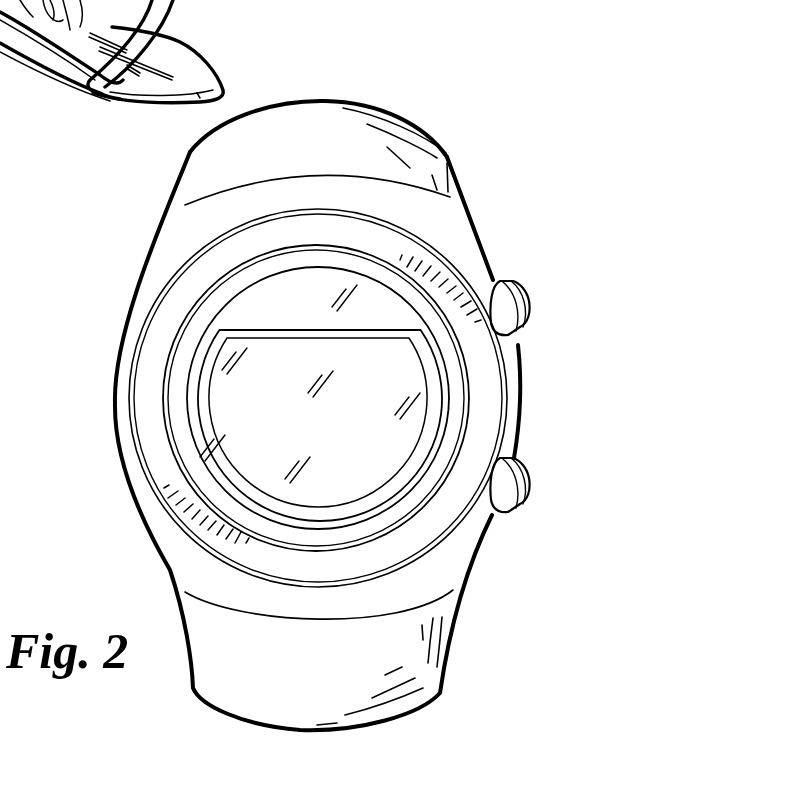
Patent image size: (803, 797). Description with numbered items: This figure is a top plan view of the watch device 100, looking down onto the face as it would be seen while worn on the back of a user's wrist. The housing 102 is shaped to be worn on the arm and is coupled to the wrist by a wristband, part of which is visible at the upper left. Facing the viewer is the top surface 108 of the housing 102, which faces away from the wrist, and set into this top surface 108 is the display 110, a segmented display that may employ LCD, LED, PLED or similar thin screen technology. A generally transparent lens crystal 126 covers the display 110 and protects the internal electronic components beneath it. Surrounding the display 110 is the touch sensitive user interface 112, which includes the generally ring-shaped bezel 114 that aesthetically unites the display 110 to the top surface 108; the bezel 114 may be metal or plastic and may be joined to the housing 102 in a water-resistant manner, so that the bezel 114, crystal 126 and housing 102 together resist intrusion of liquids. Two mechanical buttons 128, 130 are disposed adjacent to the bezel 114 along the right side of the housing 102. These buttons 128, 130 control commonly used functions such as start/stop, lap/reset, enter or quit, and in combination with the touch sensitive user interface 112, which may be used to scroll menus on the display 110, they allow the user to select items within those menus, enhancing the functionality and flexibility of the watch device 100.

The watch device 100 is at (517, 75).
The housing 102 is at (522, 386).
The top surface 108 is at (465, 245).
The display 110 is at (352, 426).
The touch sensitive user interface 112 is at (148, 397).
The bezel 114 is at (167, 312).
The lens crystal 126 is at (357, 490).
The mechanical button 128 is at (527, 300).
The mechanical button 130 is at (527, 495).